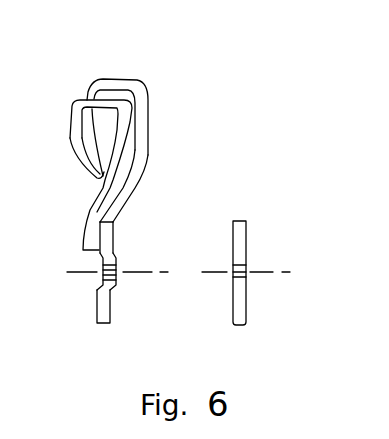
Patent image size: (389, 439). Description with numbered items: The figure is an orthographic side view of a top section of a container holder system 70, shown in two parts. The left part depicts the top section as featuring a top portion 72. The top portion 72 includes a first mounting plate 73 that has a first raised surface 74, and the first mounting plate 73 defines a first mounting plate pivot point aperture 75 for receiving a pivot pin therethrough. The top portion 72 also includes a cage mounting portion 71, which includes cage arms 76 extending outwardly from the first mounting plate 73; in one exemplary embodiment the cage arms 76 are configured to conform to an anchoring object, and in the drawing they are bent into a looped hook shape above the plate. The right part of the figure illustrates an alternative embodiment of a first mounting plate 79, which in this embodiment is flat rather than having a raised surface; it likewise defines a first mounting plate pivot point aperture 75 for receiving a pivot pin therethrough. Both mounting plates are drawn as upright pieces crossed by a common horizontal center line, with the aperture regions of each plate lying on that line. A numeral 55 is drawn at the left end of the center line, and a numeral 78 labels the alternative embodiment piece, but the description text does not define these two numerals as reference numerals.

The container holder system 70 is at (40, 184).
The cage mounting portion 71 is at (147, 142).
The top portion 72 is at (118, 310).
The first mounting plate 73 is at (109, 230).
The first raised surface 74 is at (121, 262).
The first mounting plate pivot point aperture 75 is at (102, 274).
The cage arms 76 is at (131, 87).
The pin 78 is at (256, 235).
The first mounting plate 79 is at (236, 299).
The axis 55 is at (145, 292).